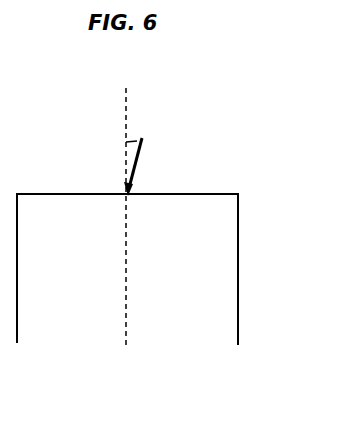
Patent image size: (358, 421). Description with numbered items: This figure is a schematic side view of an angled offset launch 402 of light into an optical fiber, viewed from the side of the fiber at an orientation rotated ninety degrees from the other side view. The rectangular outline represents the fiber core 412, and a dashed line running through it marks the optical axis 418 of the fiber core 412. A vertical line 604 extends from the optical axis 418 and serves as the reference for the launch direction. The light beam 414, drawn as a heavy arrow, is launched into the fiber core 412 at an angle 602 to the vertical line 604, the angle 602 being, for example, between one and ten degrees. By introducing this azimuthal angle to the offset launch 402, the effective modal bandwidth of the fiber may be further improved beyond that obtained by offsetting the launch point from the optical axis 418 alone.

The angled offset launch 402 is at (58, 68).
The fiber core 412 is at (189, 182).
The light beam 414 is at (139, 157).
The optical axis 418 is at (141, 284).
The angle 602 is at (135, 137).
The vertical line 604 is at (125, 114).